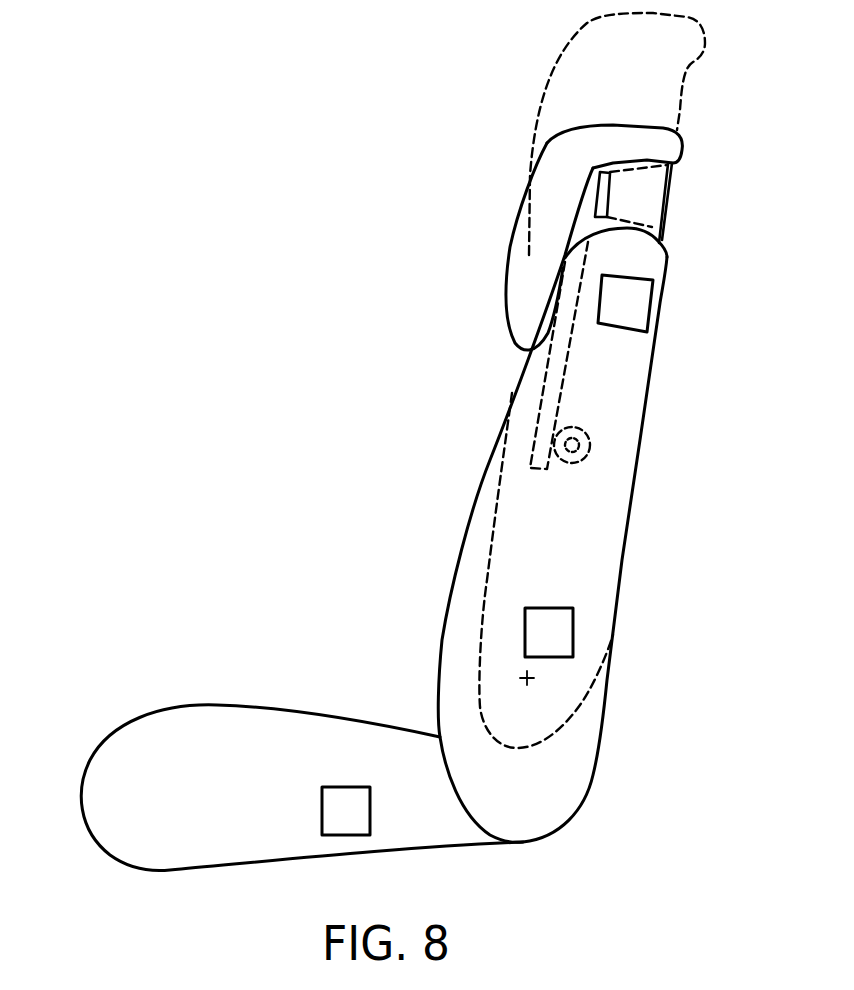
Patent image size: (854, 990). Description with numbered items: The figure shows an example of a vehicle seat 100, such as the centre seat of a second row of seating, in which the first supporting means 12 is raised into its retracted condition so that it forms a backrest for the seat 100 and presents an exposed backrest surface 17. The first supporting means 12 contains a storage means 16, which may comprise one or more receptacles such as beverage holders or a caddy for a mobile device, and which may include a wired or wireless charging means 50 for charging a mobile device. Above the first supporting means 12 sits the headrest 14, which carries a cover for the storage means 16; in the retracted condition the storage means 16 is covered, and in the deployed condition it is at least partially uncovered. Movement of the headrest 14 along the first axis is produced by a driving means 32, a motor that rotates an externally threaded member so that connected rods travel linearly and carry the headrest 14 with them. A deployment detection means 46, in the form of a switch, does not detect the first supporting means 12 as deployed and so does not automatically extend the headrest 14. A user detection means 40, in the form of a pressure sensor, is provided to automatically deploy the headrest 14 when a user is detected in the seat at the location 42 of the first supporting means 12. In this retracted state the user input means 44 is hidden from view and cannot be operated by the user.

The first supporting means 12 is at (510, 522).
The headrest 14 is at (532, 225).
The storage means 16 is at (648, 202).
The exposed backrest surface 17 is at (503, 455).
The driving means 32 is at (590, 440).
The user detection means 40 is at (357, 815).
The location 42 is at (396, 698).
The user input means 44 is at (627, 303).
The deployment detection means 46 is at (558, 623).
The charging means 50 is at (597, 170).
The vehicle seat 100 is at (130, 825).